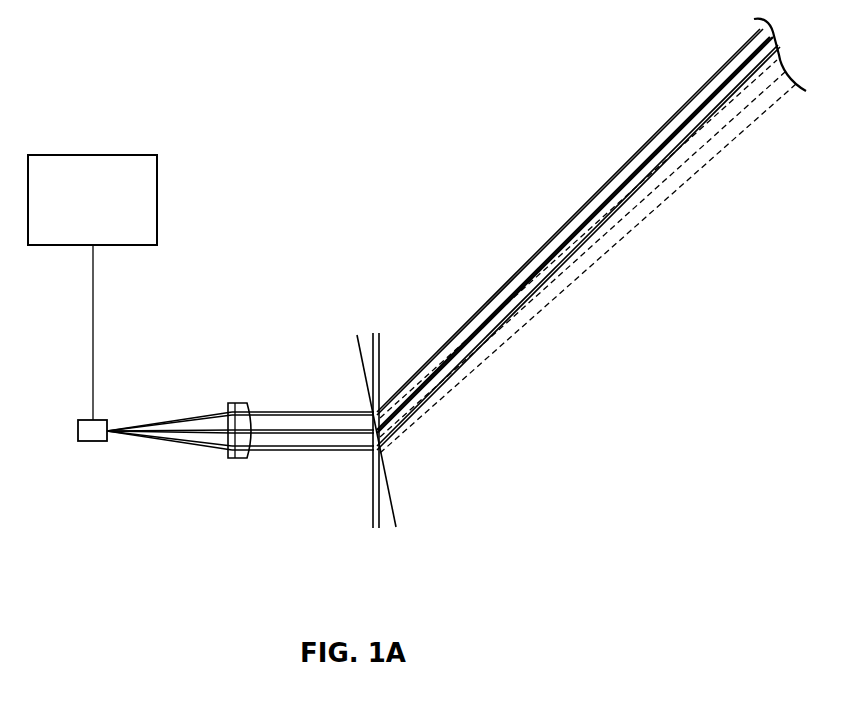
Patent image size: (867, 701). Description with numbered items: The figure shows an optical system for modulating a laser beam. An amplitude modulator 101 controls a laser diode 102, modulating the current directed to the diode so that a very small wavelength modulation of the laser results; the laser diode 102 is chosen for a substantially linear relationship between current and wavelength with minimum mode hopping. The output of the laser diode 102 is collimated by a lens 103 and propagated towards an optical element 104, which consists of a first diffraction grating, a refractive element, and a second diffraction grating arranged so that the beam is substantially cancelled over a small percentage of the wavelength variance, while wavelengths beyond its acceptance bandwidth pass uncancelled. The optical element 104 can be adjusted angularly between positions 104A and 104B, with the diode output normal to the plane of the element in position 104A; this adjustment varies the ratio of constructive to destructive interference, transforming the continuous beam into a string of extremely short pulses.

The amplitude modulator 101 is at (98, 154).
The laser diode 102 is at (93, 442).
The lens 103 is at (242, 402).
The optical element 104 is at (381, 395).
The first angular position of optical element 104A is at (372, 506).
The second angular position of optical element 104B is at (393, 510).